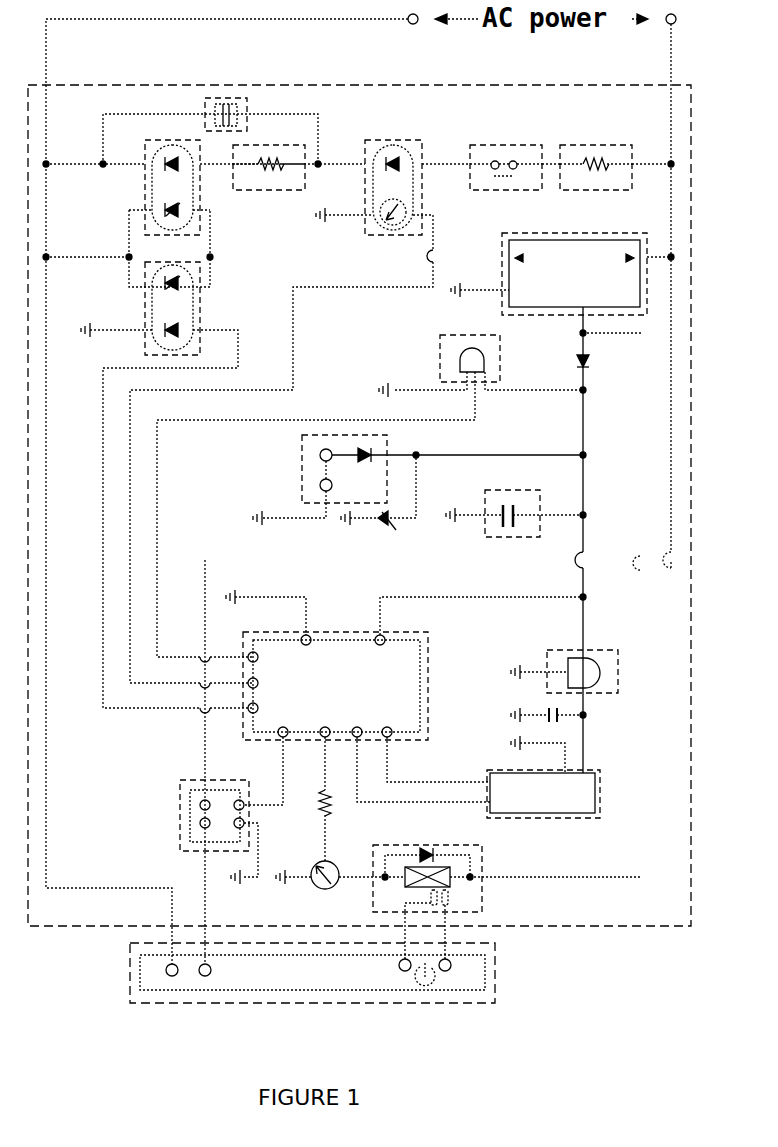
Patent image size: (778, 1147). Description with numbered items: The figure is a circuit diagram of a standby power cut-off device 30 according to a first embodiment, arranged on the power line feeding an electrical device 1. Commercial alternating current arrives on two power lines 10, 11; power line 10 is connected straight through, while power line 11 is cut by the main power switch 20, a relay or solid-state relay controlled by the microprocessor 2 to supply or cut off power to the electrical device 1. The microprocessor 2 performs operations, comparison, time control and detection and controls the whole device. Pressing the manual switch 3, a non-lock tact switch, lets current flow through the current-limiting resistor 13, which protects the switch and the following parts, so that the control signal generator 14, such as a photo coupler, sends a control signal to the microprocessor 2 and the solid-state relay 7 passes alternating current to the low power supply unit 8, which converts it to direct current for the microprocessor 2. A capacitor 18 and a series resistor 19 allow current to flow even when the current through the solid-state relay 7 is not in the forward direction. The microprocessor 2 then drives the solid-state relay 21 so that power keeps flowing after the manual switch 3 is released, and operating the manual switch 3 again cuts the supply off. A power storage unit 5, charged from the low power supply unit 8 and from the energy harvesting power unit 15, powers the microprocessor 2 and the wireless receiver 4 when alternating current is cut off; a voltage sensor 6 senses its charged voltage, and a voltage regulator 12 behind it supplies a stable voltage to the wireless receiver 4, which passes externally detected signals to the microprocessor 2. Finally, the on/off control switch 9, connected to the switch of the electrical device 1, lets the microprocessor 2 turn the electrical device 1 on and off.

The electrical device 1 is at (130, 965).
The microprocessor 2 is at (428, 683).
The manual switch 3 is at (493, 142).
The wireless receiver 4 is at (557, 820).
The power storage unit 5 is at (505, 492).
The voltage sensor 6 is at (440, 350).
The solid-state relay 7 is at (143, 178).
The low power supply unit 8 is at (502, 250).
The on/off control switch 9 is at (482, 885).
The power line 10 is at (48, 45).
The power line 11 is at (671, 52).
The voltage regulator 12 is at (596, 650).
The current-limiting resistor 13 is at (590, 143).
The control signal generator 14 is at (412, 137).
The energy harvesting power unit 15 is at (302, 460).
The capacitor 18 is at (230, 97).
The resistor 19 is at (275, 195).
The main power switch 20 is at (180, 805).
The solid-state relay 21 is at (203, 297).
The standby power cut-off device 30 is at (577, 927).